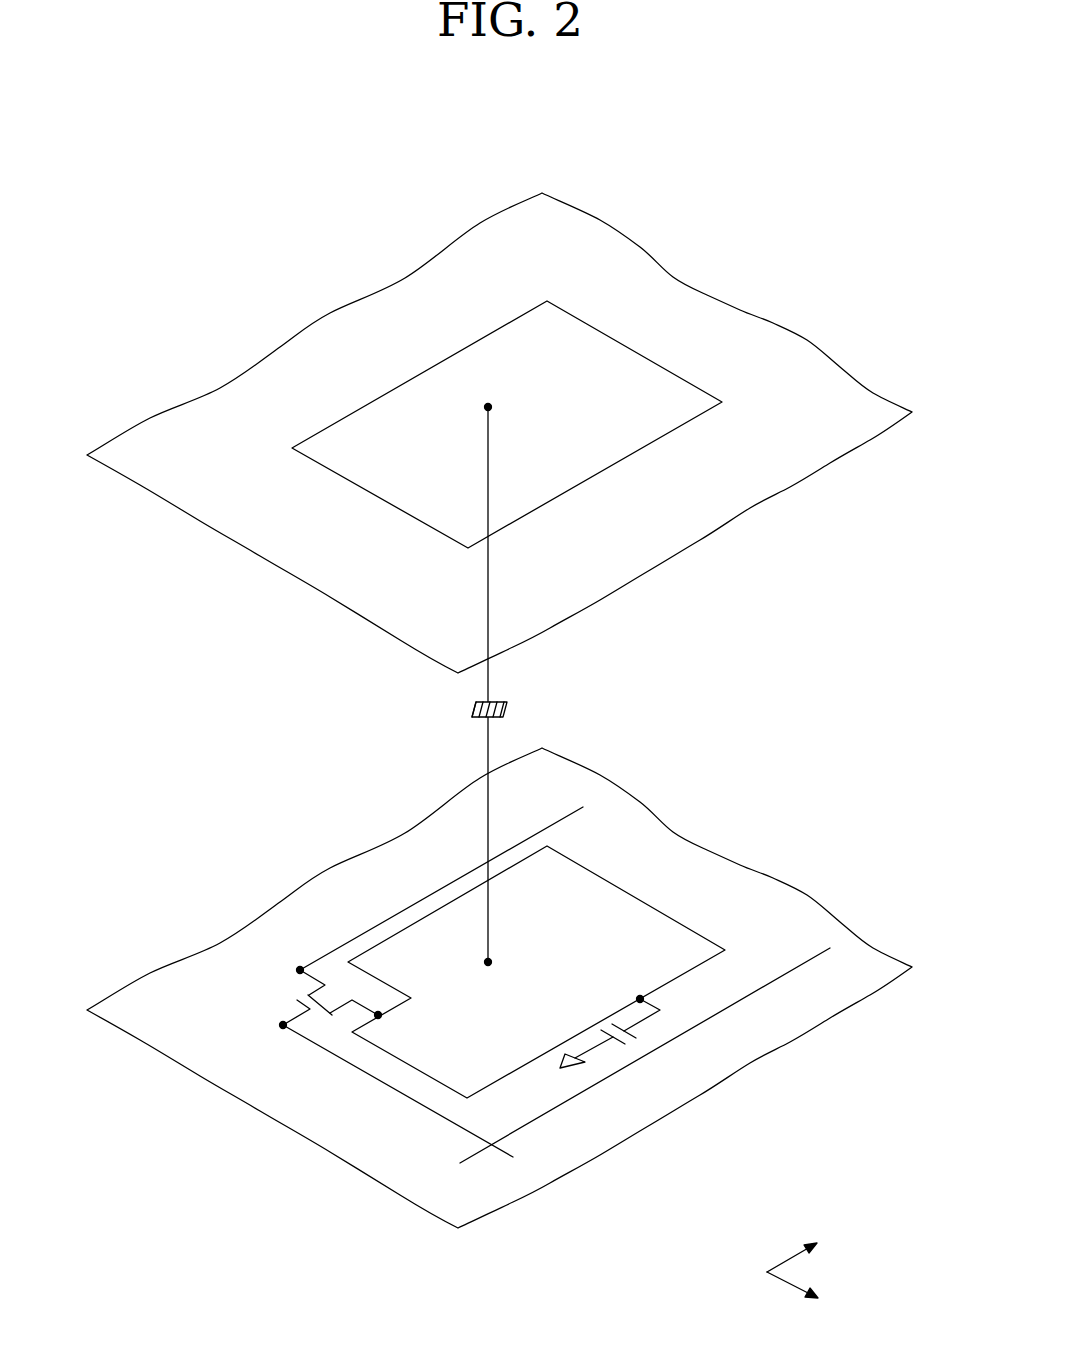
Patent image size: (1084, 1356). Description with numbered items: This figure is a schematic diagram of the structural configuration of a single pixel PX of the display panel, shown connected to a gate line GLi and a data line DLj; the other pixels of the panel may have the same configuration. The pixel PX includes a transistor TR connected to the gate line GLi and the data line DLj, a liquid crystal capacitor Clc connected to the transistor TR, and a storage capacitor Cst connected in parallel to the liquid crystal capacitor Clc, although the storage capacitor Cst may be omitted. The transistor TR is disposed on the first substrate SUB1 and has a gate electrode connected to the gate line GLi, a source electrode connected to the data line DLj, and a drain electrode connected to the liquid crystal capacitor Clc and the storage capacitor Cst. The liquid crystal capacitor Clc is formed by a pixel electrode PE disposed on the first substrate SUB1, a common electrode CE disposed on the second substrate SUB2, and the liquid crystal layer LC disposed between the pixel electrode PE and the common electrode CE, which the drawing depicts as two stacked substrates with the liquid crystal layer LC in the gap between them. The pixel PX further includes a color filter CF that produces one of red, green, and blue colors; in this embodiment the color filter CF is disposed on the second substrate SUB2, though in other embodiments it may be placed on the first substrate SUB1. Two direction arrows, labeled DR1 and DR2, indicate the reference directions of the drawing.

The pixel PX is at (739, 262).
The second substrate SUB2 is at (590, 608).
The common electrode CE is at (783, 477).
The color filter CF is at (603, 472).
The liquid crystal layer LC is at (680, 702).
The liquid crystal capacitor Clc is at (512, 709).
The pixel electrode PE is at (620, 887).
The gate line GLi is at (283, 1025).
The data line DLj is at (300, 970).
The transistor TR is at (316, 1026).
The storage capacitor Cst is at (643, 1033).
The first substrate SUB1 is at (675, 1102).
The first direction DR1 is at (812, 1294).
The second direction DR2 is at (812, 1251).